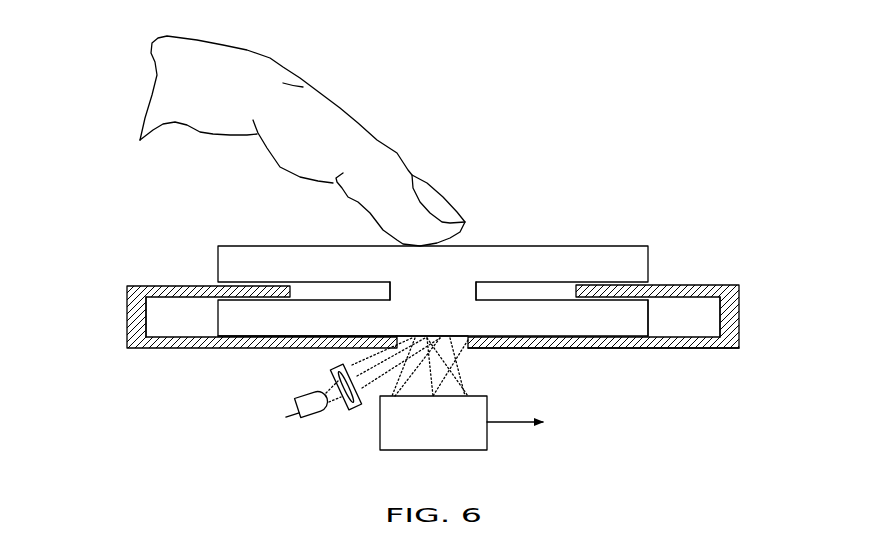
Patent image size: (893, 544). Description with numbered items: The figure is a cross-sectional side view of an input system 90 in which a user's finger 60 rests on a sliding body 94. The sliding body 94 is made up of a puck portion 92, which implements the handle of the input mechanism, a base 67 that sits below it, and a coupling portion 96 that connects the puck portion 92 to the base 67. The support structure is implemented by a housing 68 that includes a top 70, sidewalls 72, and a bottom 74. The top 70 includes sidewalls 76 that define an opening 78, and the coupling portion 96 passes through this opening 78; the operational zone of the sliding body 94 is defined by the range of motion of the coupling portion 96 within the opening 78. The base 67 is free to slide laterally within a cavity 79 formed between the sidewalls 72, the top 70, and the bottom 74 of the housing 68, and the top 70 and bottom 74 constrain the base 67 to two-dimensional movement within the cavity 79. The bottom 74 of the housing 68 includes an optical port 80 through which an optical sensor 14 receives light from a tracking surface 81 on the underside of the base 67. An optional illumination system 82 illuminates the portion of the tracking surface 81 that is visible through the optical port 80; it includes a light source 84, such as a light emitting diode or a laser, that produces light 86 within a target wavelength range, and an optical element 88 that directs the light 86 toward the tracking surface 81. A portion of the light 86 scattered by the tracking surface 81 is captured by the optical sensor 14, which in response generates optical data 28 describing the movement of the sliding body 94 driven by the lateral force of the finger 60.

The optical sensor 14 is at (488, 404).
The optical data 28 is at (505, 425).
The user's finger 60 is at (373, 137).
The base 67 is at (217, 322).
The housing 68 is at (466, 305).
The top 70 is at (678, 285).
The sidewalls 72 is at (739, 313).
The bottom 74 is at (682, 348).
The sidewalls 76 is at (290, 290).
The opening 78 is at (535, 285).
The cavity 79 is at (672, 318).
The optical port 80 is at (472, 360).
The tracking surface 81 is at (253, 338).
The illumination system 82 is at (292, 406).
The light source 84 is at (297, 404).
The light 86 is at (330, 383).
The optical element 88 is at (358, 410).
The input system 90 is at (605, 137).
The puck portion 92 is at (613, 247).
The sliding body 94 is at (177, 227).
The coupling portion 96 is at (423, 282).